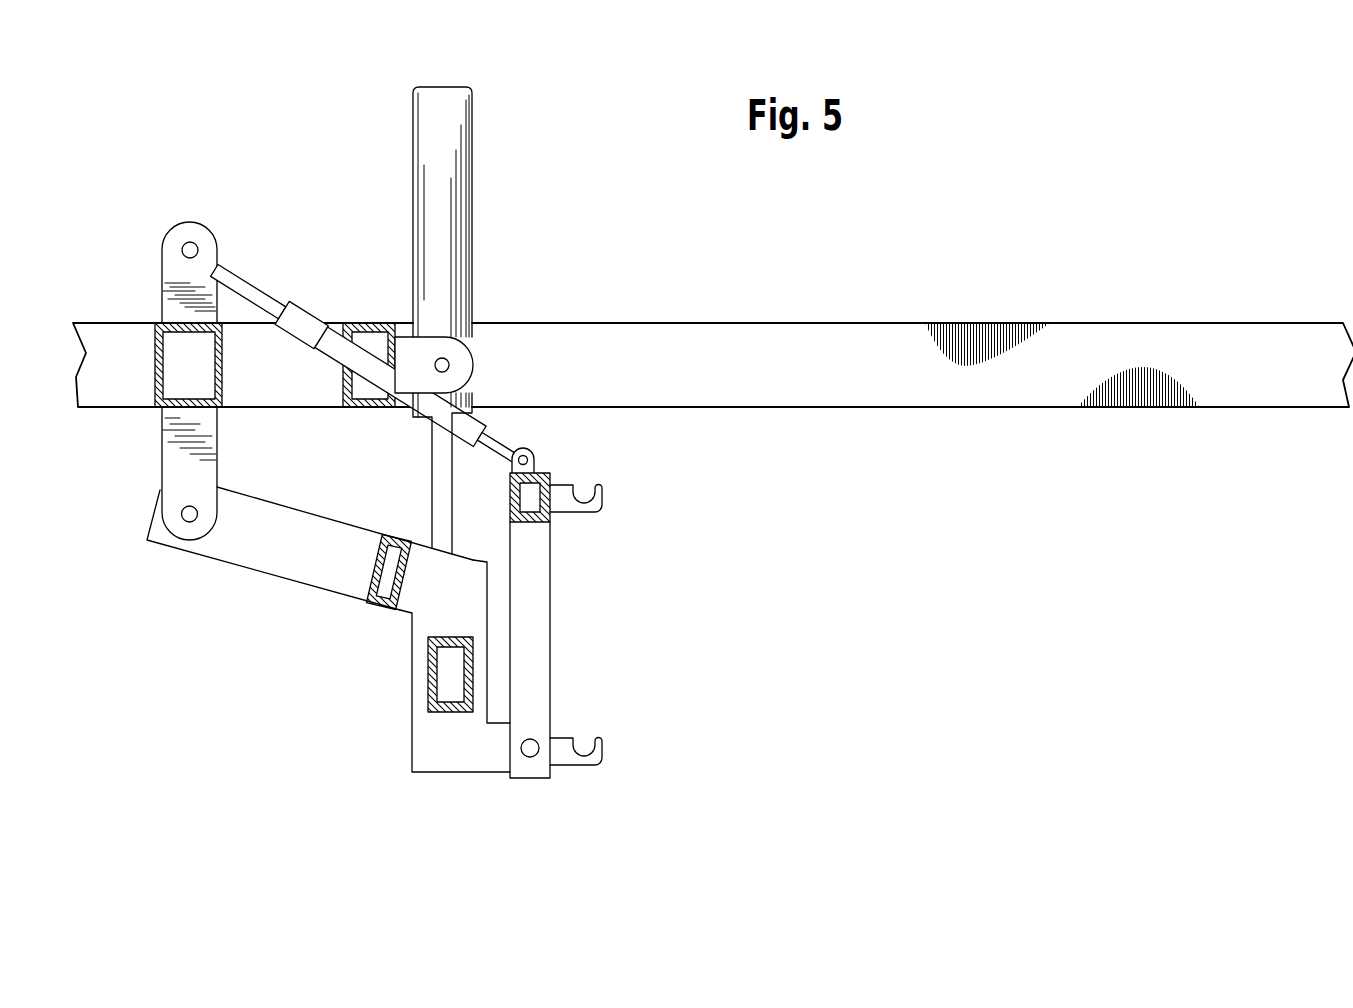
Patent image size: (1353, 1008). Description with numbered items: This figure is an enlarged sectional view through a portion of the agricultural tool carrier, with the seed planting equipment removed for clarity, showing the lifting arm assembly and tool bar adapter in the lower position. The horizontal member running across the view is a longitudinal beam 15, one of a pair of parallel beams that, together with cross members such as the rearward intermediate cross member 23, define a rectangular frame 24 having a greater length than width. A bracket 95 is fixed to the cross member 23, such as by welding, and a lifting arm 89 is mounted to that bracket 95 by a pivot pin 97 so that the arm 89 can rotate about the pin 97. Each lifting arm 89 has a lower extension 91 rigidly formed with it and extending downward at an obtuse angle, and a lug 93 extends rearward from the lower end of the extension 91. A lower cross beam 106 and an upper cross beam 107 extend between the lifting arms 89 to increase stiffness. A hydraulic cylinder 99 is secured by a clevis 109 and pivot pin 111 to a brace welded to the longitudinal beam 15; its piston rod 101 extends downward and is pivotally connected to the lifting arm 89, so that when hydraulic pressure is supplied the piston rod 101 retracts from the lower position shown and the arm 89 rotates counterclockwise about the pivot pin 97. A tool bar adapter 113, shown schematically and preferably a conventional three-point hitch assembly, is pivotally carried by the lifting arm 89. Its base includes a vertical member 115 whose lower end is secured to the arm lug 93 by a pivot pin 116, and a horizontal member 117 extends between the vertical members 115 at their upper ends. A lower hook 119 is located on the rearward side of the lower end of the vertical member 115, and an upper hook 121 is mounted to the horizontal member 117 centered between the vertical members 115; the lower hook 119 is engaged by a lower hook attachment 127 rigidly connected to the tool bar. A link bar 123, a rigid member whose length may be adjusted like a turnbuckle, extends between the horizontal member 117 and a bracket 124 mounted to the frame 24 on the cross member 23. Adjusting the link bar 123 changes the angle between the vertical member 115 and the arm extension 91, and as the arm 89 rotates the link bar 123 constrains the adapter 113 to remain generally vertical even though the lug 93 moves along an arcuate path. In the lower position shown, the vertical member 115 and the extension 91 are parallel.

The longitudinal beam 15 is at (672, 343).
The rearward intermediate cross member 23 is at (157, 363).
The rectangular frame 24 is at (1072, 324).
The lifting arm 89 is at (288, 548).
The lower extension 91 is at (420, 757).
The lug 93 is at (498, 748).
The bracket 95 is at (212, 487).
The pivot pin 97 is at (188, 522).
The hydraulic cylinder 99 is at (453, 170).
The piston rod 101 is at (440, 452).
The lower cross beam 106 is at (430, 682).
The upper cross beam 107 is at (386, 608).
The clevis 109 is at (445, 332).
The pivot pin 111 is at (449, 360).
The tool bar adapter 113 is at (557, 472).
The vertical member 115 is at (530, 595).
The pivot pin 116 is at (530, 758).
The horizontal member 117 is at (510, 493).
The lower hook 119 is at (583, 768).
The upper hook 121 is at (605, 495).
The link bar 123 is at (300, 306).
The bracket 124 is at (175, 277).
The lower hook attachment 127 is at (190, 243).